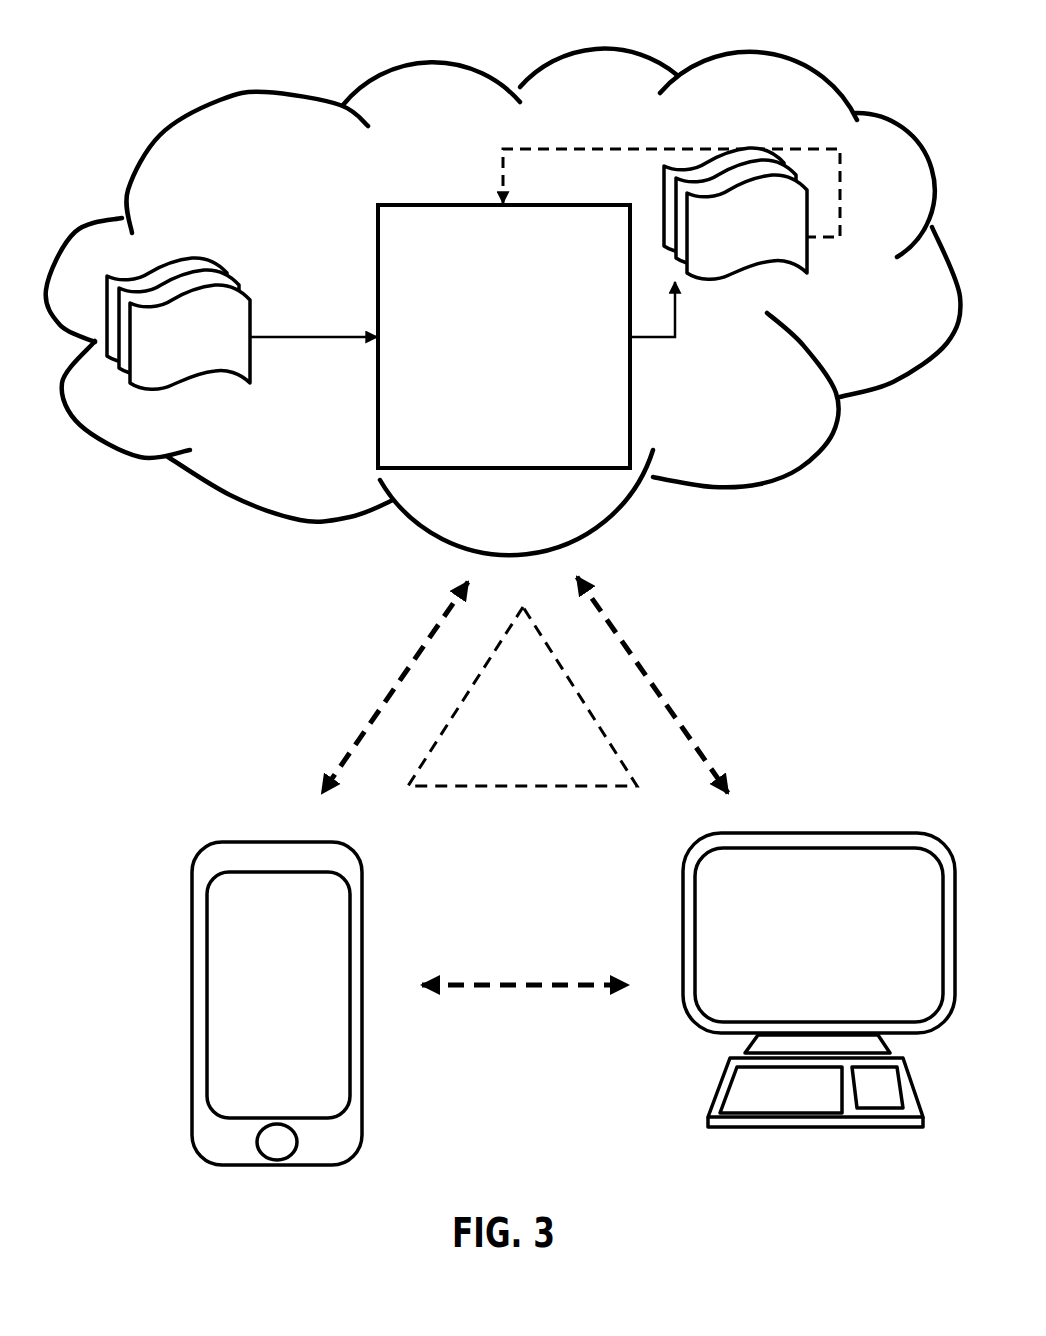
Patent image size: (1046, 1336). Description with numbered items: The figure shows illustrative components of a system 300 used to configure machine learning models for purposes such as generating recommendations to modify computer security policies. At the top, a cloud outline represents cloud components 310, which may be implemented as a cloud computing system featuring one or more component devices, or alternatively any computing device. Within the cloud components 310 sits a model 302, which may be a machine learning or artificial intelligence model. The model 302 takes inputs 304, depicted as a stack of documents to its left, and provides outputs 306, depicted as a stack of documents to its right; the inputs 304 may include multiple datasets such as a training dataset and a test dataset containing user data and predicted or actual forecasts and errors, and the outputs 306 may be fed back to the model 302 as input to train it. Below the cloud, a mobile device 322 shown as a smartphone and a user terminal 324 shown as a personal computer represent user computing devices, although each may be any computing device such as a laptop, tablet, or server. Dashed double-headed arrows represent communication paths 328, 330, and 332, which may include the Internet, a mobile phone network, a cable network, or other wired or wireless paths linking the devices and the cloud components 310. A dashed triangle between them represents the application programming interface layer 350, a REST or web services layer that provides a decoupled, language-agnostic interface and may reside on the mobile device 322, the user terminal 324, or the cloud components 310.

The system 300 is at (521, 46).
The cloud components 310 is at (800, 117).
The model 302 is at (523, 350).
The inputs 304 is at (197, 262).
The outputs 306 is at (783, 266).
The application programming interface (API) layer 350 is at (544, 722).
The communication path 328 is at (349, 677).
The communication path 330 is at (734, 645).
The communication path 332 is at (515, 955).
The mobile device 322 is at (265, 820).
The user terminal 324 is at (810, 829).